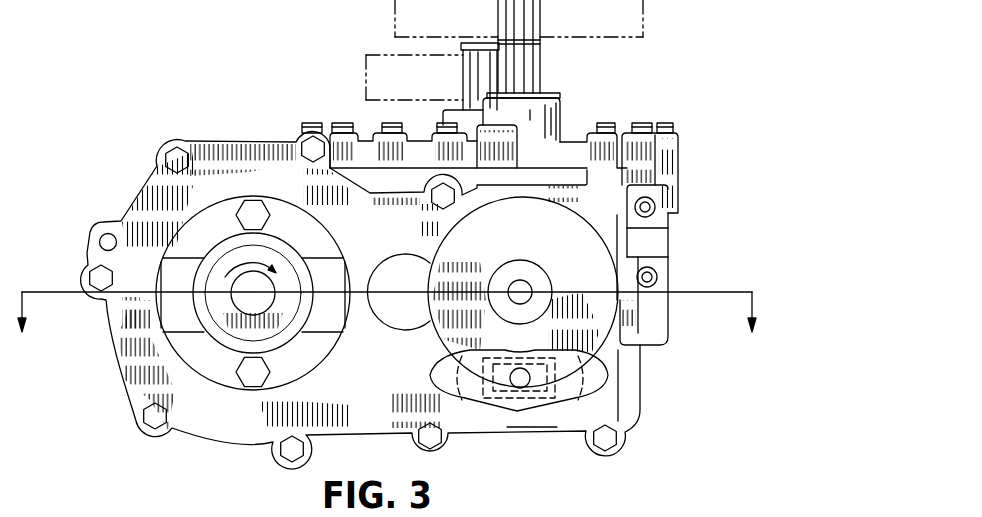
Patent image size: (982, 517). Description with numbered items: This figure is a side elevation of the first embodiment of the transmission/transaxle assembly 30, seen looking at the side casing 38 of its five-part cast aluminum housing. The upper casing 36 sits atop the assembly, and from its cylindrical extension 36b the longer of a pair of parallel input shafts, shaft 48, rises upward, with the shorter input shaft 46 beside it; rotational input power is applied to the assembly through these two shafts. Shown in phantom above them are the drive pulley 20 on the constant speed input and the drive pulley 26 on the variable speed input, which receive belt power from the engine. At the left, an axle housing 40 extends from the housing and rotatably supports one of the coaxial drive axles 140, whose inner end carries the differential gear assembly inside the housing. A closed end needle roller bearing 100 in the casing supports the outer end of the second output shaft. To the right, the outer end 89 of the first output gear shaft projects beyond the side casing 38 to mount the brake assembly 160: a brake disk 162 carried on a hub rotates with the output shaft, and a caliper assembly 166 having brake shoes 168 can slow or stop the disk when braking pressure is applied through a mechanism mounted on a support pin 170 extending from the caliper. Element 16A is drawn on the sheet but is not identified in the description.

The transmission/transaxle assembly 30 is at (196, 100).
The side casing 38 is at (228, 140).
The upper casing 36 is at (668, 150).
The cylindrical extension 36b is at (549, 108).
The input shaft 46 is at (468, 72).
The input shaft 48 is at (528, 72).
The drive pulley 26 is at (620, 22).
The drive pulley 20 is at (366, 78).
The axle housing 40 is at (217, 345).
The drive axle 140 is at (257, 303).
The closed end needle roller bearing 100 is at (392, 322).
The gear 16A is at (497, 278).
The outer end of shaft 89 is at (519, 284).
The brake assembly 160 is at (624, 330).
The brake disk 162 is at (601, 321).
The caliper assembly 166 is at (620, 411).
The brake shoes 168 is at (538, 412).
The support pin 170 is at (514, 386).